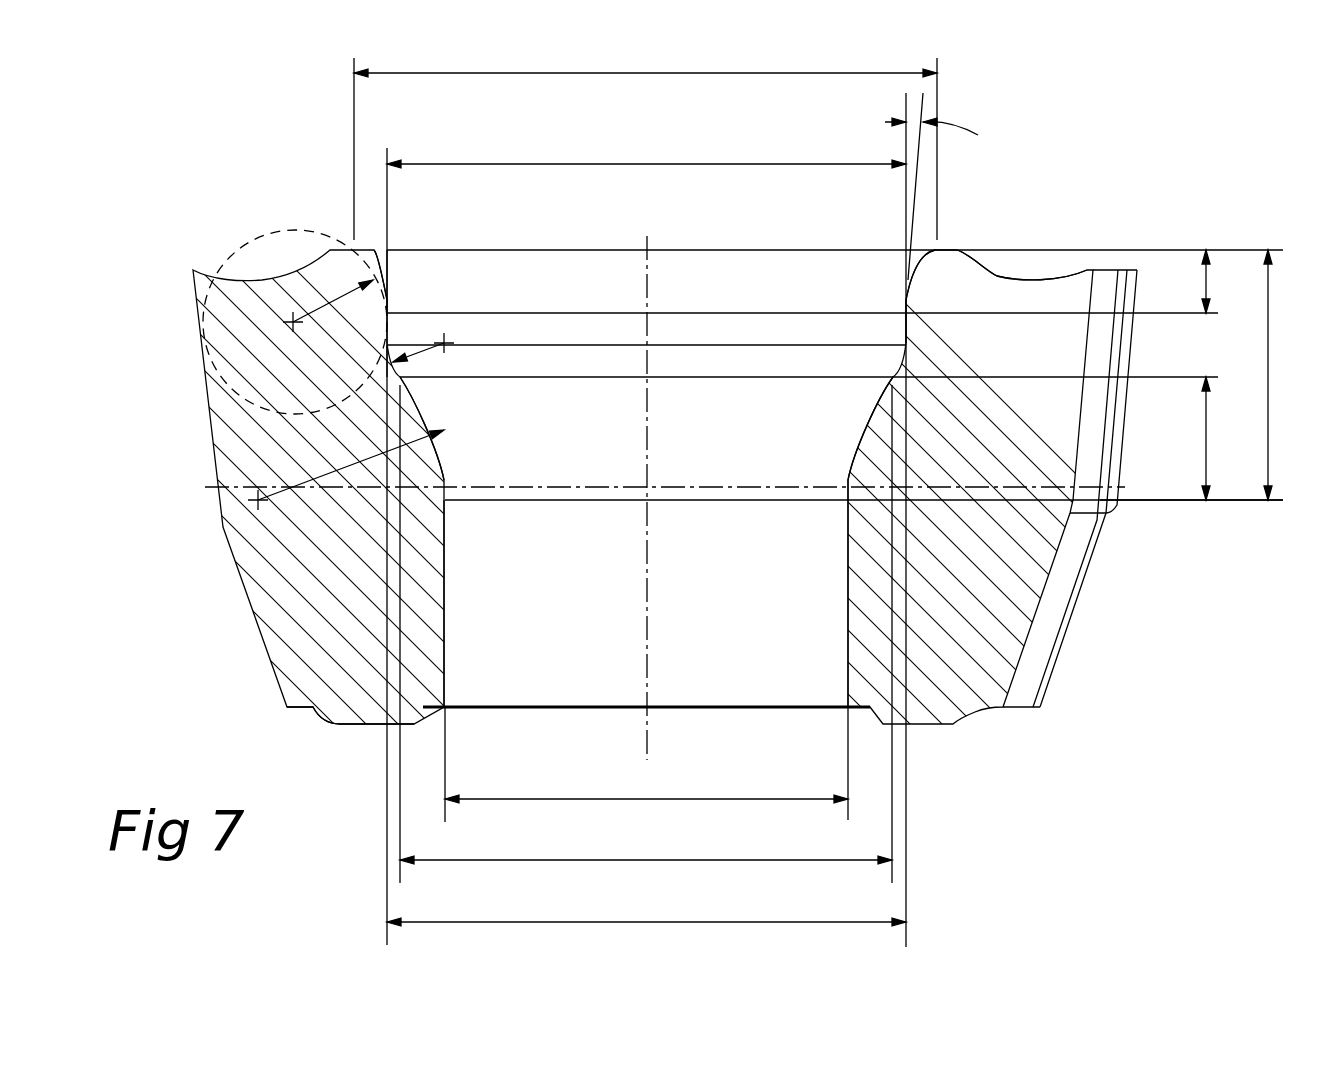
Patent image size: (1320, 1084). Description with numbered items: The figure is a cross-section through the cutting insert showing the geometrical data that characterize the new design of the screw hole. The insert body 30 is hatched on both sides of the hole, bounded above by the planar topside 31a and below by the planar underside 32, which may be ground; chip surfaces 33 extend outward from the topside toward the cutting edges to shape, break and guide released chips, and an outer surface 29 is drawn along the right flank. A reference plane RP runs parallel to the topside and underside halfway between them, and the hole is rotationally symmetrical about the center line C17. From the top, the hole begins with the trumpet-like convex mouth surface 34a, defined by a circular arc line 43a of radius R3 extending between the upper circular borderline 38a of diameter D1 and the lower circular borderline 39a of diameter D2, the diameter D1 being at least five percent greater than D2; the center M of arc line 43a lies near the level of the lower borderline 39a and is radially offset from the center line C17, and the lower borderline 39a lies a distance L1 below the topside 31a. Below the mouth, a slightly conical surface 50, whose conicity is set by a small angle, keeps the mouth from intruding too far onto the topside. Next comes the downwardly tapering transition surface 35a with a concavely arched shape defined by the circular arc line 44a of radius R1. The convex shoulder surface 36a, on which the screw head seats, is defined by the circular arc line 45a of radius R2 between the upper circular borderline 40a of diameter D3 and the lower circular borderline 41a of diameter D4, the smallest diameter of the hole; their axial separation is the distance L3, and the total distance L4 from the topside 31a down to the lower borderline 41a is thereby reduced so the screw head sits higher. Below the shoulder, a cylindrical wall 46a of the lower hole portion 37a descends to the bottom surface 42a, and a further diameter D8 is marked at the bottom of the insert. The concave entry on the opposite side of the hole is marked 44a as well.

The outer sleeve / taper surface 29 is at (1118, 438).
The tool holder body 30 is at (206, 408).
The topside 31a is at (948, 250).
The underside 32 is at (360, 724).
The chip surfaces 33 is at (1046, 277).
The mouth surface 34a is at (714, 300).
The transition surface 35a is at (714, 373).
The shoulder surface 36a is at (714, 445).
The fourth bore section 37a is at (714, 605).
The upper circular borderline 38a is at (478, 251).
The lower circular borderline 39a is at (512, 314).
The upper circular borderline 40a is at (527, 378).
The lower circular borderline 41a is at (528, 501).
The bottom bore surface 42a is at (500, 706).
The arc line 43a is at (387, 268).
The circular arc line 44a is at (904, 358).
The circular arc line 45a is at (850, 465).
The cylindrical bore wall 46a is at (848, 592).
The conical surface 50 is at (681, 340).
The center line C17 is at (647, 236).
The center of the circular arc line M is at (291, 318).
The radius R1 is at (408, 346).
The radius R2 is at (346, 470).
The radius R3 is at (318, 292).
The diameter D1 is at (645, 143).
The diameter D2 is at (646, 520).
The diameter D3 is at (646, 634).
The smallest diameter D4 is at (646, 764).
The diameter D8 is at (646, 910).
The distance L1 is at (1221, 281).
The axial distance L3 is at (1221, 438).
The total distance L4 is at (1284, 375).
The reference plane RP is at (1122, 488).